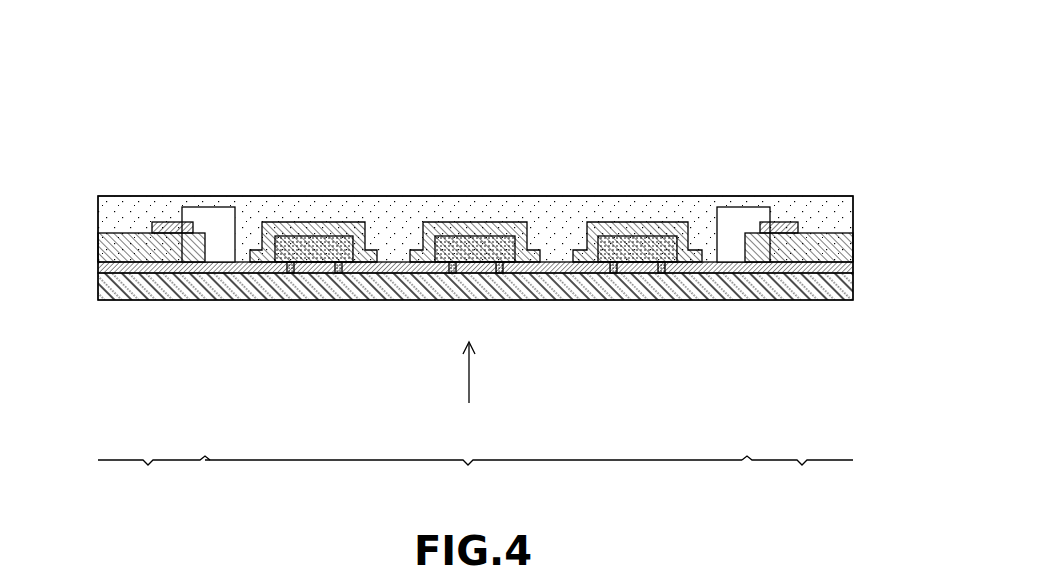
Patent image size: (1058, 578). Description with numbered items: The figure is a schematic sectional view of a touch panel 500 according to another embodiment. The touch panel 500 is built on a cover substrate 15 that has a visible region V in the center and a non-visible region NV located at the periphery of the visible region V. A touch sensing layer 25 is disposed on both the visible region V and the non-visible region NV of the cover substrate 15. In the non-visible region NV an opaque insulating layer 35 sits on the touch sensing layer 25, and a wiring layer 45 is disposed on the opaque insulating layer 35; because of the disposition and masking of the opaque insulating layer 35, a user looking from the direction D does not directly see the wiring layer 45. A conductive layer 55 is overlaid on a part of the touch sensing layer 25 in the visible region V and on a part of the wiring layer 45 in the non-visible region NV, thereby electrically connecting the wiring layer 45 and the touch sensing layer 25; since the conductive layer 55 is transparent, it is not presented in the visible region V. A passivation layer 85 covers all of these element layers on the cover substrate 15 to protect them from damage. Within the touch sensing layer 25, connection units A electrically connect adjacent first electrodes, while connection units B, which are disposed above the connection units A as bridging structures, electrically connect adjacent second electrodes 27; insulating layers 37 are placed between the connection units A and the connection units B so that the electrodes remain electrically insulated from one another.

The touch panel 500 is at (833, 85).
The cover substrate 15 is at (853, 285).
The touch sensing layer 25 is at (98, 270).
The second electrodes 27 is at (680, 275).
The opaque insulating layer 35 is at (98, 253).
The insulating layers 37 is at (318, 240).
The wiring layer 45 is at (152, 225).
The conductive layer 55 is at (217, 220).
The passivation layer 85 is at (393, 210).
The connection units A is at (625, 272).
The connection units B is at (597, 225).
The direction D is at (482, 372).
The visible region V is at (473, 484).
The non-visible region NV is at (475, 482).